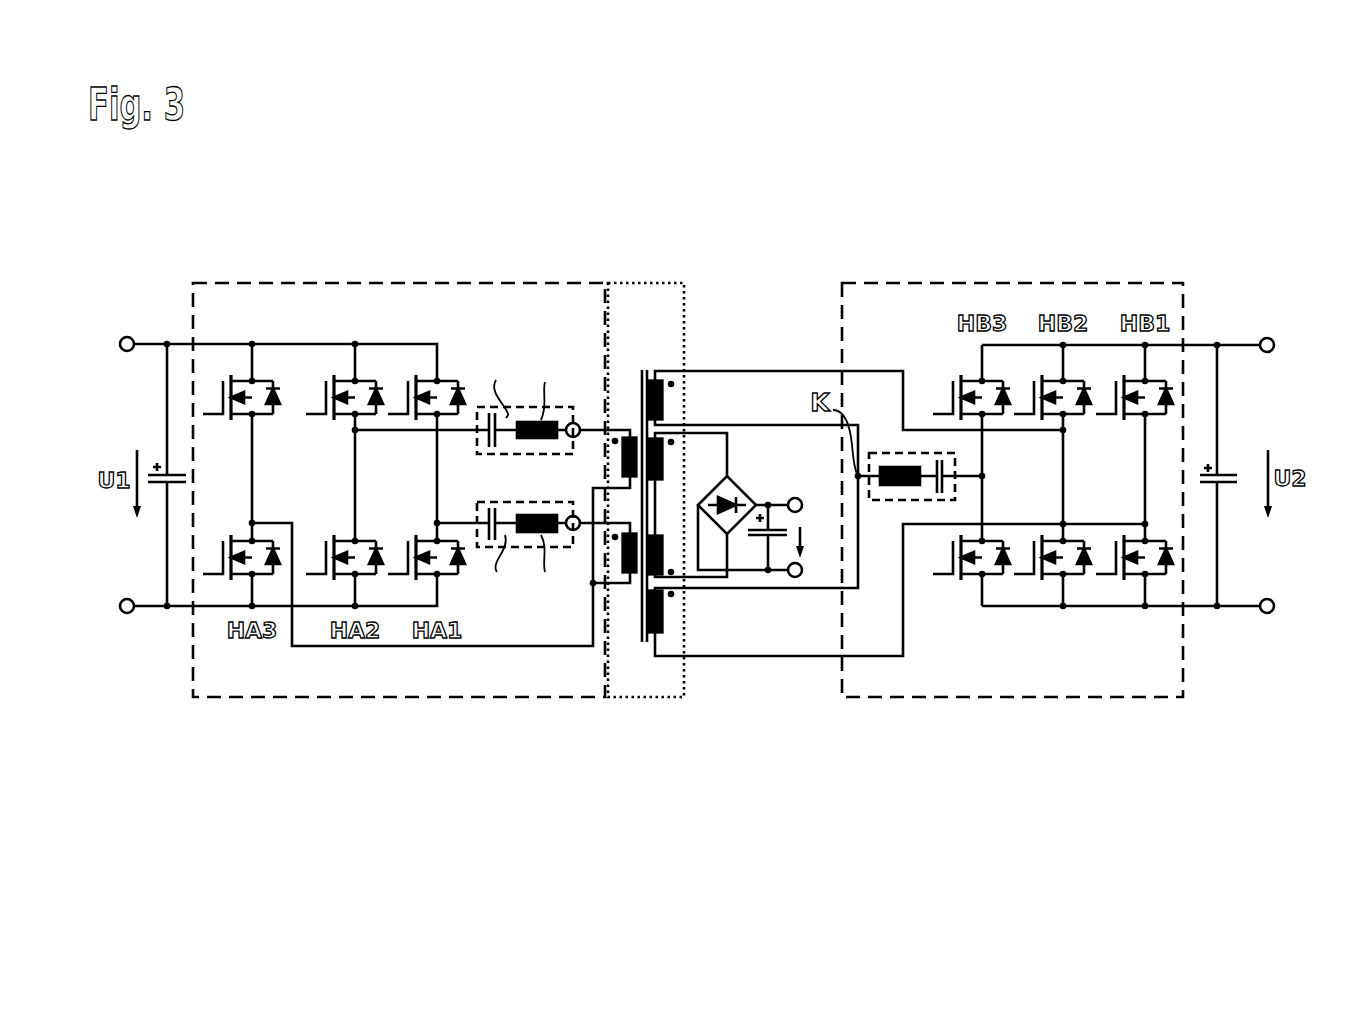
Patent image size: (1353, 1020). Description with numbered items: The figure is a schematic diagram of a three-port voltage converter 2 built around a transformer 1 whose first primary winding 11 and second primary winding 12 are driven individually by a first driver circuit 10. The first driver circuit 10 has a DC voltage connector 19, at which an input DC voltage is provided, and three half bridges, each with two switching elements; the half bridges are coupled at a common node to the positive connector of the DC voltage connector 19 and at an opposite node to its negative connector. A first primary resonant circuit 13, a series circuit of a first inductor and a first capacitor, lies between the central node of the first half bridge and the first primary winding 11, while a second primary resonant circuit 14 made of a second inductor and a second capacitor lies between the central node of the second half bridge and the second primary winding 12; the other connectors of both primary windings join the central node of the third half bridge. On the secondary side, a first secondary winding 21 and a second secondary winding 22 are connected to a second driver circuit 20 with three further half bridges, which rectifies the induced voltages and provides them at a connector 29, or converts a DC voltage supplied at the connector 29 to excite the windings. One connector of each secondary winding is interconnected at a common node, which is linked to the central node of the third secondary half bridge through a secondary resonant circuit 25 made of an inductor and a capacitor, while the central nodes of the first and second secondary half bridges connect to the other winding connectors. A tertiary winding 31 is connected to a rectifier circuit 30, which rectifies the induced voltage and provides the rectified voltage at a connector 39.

The transformer 1 is at (651, 700).
The three-port voltage converter 2 is at (172, 731).
The first driver circuit 10 is at (410, 698).
The first primary winding 11 is at (633, 577).
The second primary winding 12 is at (633, 437).
The first primary resonant circuit 13 is at (523, 548).
The second primary resonant circuit 14 is at (525, 407).
The DC voltage connector 19 is at (156, 410).
The second driver circuit 20 is at (1023, 698).
The first secondary winding 21 is at (665, 616).
The second secondary winding 22 is at (665, 399).
The secondary resonant circuit 25 is at (905, 450).
The connector 29 is at (1251, 410).
The rectifier circuit 30 is at (740, 486).
The tertiary winding 31 is at (667, 537).
The connector 39 is at (801, 516).